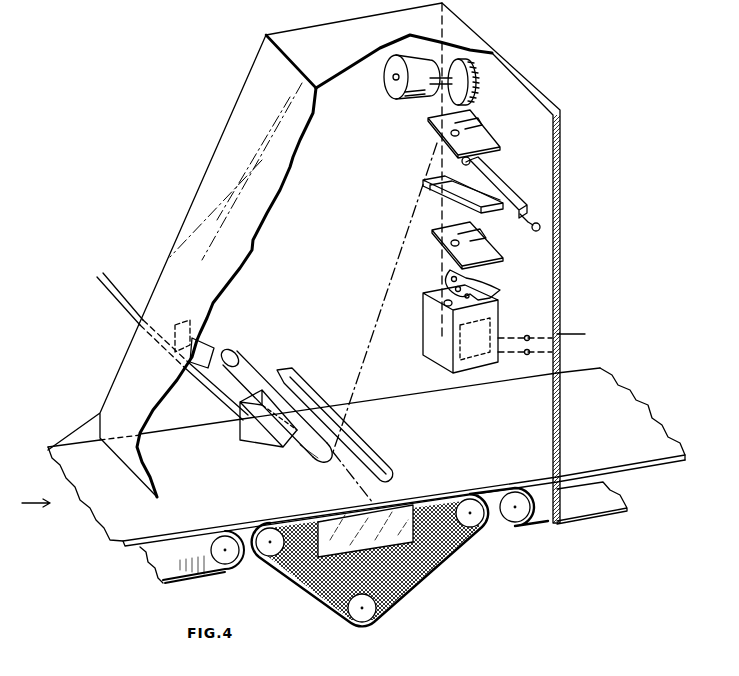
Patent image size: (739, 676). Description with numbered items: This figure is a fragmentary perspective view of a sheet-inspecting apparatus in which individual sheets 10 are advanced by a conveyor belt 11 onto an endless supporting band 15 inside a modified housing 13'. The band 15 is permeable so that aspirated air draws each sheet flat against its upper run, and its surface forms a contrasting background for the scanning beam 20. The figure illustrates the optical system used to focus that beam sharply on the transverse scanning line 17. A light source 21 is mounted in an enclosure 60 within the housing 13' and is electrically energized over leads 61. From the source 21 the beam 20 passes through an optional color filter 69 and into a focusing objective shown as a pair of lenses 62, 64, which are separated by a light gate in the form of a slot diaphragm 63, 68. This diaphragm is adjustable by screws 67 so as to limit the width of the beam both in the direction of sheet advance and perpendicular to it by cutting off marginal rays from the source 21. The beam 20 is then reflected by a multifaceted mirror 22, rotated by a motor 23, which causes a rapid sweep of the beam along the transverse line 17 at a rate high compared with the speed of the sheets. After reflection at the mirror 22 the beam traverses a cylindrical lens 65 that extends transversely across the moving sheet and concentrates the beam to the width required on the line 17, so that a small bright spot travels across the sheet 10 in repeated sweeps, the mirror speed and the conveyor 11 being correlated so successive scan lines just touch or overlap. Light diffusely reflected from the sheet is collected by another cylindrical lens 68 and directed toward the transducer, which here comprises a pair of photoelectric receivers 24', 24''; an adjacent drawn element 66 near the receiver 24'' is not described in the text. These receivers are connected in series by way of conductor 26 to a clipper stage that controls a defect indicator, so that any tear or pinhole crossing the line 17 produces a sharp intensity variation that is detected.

The sheet 10 is at (82, 452).
The conveyor belt 11 is at (190, 568).
The modified housing 13' is at (182, 248).
The endless supporting band 15 is at (424, 574).
The scanning line 17 is at (356, 491).
The scanning beam 20 is at (392, 278).
The light source 21 is at (433, 345).
The multifaceted mirror 22 is at (468, 80).
The motor 23 is at (397, 92).
The photoelectric receiver 24' is at (205, 344).
The photoelectric receiver 24'' is at (272, 406).
The conductor 26 is at (128, 303).
The enclosure 60 is at (497, 332).
The leads 61 is at (568, 335).
The lens 62 is at (450, 246).
The slot diaphragm 63 is at (473, 202).
The lens 64 is at (466, 128).
The cylindrical lens 65 is at (380, 459).
The roller end 66 is at (310, 458).
The screws 67 is at (531, 228).
The slot diaphragm part / cylindrical lens 68 is at (427, 199).
The color filter 69 is at (448, 278).